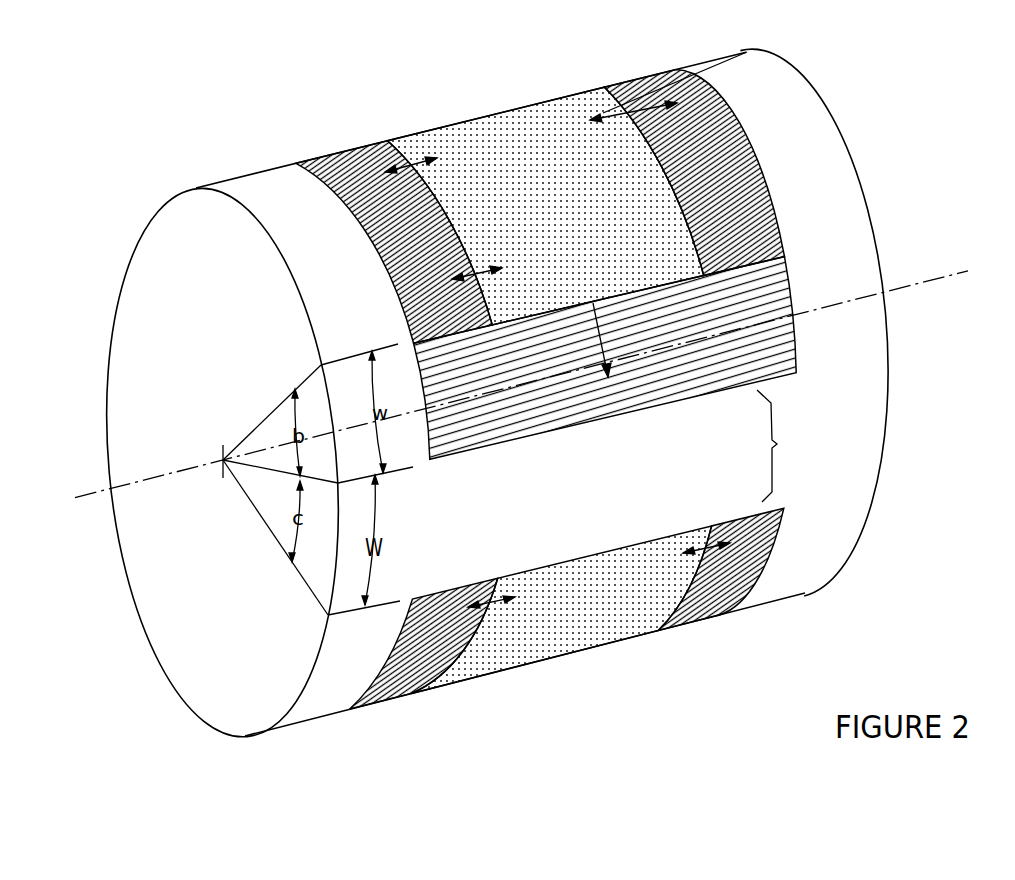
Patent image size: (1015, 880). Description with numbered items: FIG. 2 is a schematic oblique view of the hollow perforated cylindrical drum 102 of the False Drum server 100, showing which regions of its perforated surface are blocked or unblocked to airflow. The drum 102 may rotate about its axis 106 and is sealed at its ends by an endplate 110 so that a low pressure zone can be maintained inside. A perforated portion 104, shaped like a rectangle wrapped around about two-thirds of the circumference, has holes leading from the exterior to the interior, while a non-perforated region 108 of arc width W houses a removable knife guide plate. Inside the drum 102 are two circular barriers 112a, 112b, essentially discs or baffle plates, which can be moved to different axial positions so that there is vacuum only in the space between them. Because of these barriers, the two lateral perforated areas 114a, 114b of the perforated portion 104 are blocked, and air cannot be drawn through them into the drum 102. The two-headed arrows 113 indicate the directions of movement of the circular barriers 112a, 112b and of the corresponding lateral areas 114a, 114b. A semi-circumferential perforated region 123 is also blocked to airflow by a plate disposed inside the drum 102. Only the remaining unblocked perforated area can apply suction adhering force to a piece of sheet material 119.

The False Drum server 100 is at (268, 100).
The cylindrical drum 102 is at (832, 172).
The perforated portion 104 is at (290, 163).
The axis 106 is at (933, 272).
The non-perforated region 108 is at (777, 444).
The endplate 110 is at (137, 276).
The first circular barrier 112a is at (393, 160).
The second circular barrier 112b is at (603, 100).
The two-headed arrows 113 is at (747, 52).
The first lateral perforated area 114a is at (327, 155).
The second lateral perforated area 114b is at (665, 78).
The sheet material 119 is at (487, 130).
The semi-circumferential perforated region 123 is at (773, 328).